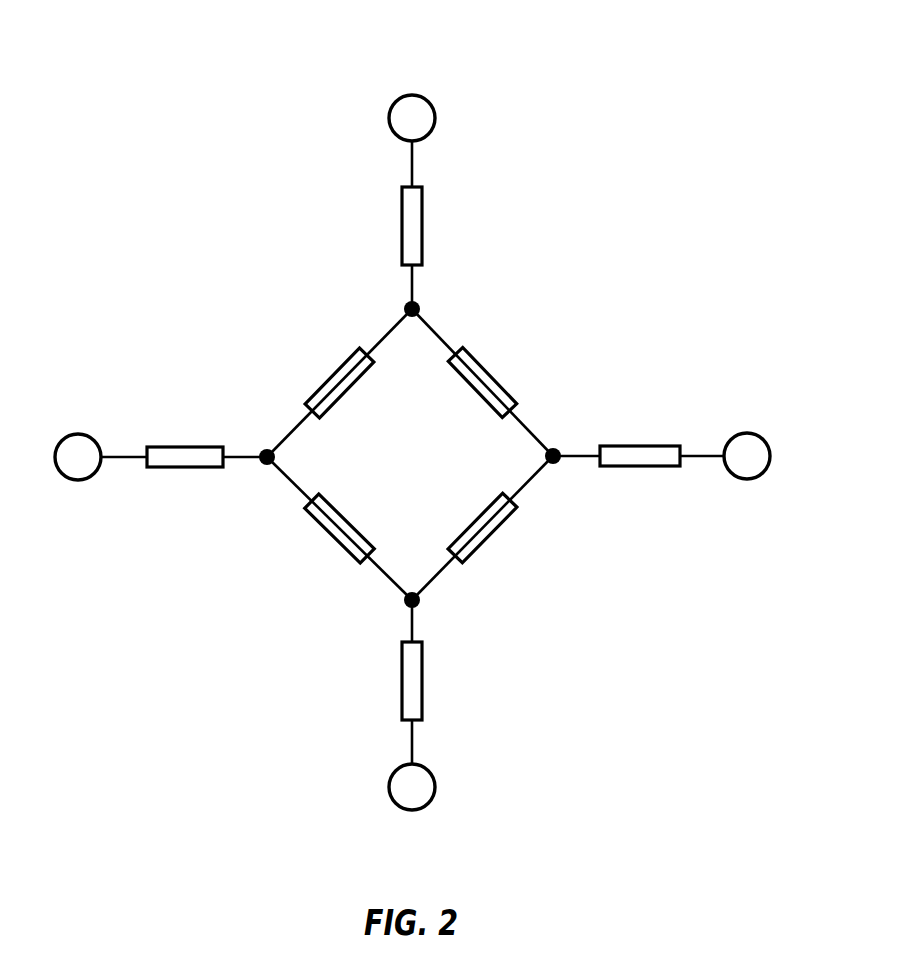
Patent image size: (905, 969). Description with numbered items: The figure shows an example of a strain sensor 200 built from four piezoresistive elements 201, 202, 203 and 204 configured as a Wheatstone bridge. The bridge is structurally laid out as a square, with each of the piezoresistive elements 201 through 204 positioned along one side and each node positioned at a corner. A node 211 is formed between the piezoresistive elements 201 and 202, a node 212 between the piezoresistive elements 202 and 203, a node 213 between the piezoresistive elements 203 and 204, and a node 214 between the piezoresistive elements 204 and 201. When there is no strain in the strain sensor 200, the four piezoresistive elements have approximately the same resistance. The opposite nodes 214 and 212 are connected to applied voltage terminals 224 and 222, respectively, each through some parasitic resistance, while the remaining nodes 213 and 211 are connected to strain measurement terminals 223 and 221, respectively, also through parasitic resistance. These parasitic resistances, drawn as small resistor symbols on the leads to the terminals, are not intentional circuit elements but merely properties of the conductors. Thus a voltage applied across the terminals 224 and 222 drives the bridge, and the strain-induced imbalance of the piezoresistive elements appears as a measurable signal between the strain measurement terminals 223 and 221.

The strain sensor 200 is at (431, 32).
The piezoresistive element 201 is at (477, 383).
The piezoresistive element 202 is at (473, 533).
The piezoresistive element 203 is at (347, 533).
The piezoresistive element 204 is at (348, 378).
The node 211 is at (560, 462).
The node 212 is at (420, 605).
The node 213 is at (261, 450).
The node 214 is at (420, 305).
The strain measurement terminal 221 is at (750, 479).
The applied voltage terminal 222 is at (434, 787).
The strain measurement terminal 223 is at (83, 480).
The applied voltage terminal 224 is at (433, 111).